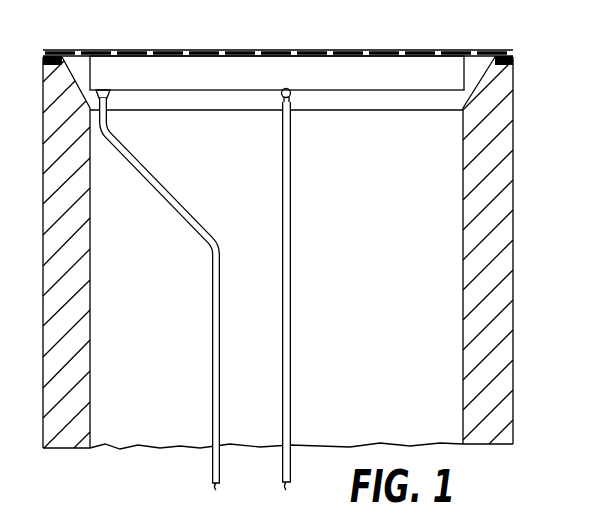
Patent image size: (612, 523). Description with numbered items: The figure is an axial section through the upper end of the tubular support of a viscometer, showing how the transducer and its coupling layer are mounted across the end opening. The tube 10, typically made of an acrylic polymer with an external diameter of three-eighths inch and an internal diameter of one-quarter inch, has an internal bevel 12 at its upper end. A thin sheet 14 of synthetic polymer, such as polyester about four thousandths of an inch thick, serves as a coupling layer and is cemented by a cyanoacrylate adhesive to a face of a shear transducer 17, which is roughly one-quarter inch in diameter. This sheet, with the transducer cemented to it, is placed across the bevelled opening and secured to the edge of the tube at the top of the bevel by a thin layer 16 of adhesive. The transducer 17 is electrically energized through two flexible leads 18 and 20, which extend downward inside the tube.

The tube 10 is at (493, 293).
The internal bevel 12 is at (476, 82).
The thin sheet 14 is at (343, 51).
The thin layer of adhesive 16 is at (513, 59).
The shear transducer 17 is at (348, 77).
The flexible lead 18 is at (212, 328).
The flexible lead 20 is at (290, 285).